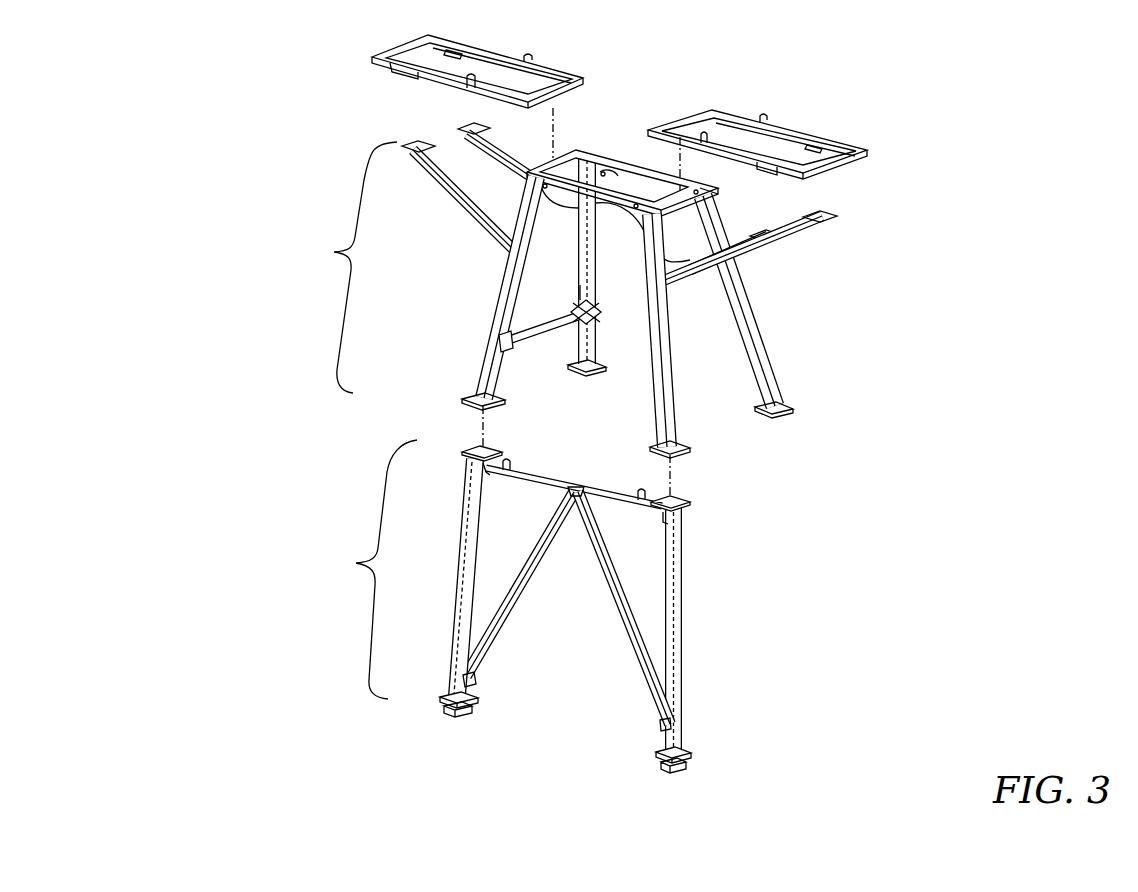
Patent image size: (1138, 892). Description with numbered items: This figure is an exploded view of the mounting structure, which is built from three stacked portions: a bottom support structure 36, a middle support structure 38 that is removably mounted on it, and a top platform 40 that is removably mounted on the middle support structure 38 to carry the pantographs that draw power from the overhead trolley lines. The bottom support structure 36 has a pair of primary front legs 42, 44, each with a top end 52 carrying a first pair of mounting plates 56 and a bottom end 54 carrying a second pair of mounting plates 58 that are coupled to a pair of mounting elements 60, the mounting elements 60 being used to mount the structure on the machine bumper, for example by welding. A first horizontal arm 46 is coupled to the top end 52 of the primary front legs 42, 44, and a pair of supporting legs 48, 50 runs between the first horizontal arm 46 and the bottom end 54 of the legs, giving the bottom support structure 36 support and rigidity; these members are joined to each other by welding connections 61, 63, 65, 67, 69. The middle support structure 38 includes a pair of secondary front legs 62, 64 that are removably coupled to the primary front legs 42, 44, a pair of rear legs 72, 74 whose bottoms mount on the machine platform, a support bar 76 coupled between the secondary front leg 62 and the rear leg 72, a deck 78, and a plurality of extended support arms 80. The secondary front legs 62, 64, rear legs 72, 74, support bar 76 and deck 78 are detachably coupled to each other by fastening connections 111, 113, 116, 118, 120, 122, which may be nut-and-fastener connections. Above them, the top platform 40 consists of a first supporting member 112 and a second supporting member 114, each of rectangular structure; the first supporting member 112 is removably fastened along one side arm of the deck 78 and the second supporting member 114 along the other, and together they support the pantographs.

The bottom support structure 36 is at (549, 605).
The middle support structure 38 is at (572, 270).
The top platform 40 is at (655, 102).
The primary front leg 42 is at (464, 603).
The primary front leg 44 is at (683, 668).
The first horizontal arm 46 is at (620, 500).
The supporting leg 48 is at (503, 608).
The supporting leg 50 is at (622, 620).
The top end 52 is at (455, 453).
The bottom end 54 is at (583, 721).
The first pair of mounting plates 56 is at (496, 450).
The second pair of mounting plates 58 is at (478, 697).
The mounting element 60 is at (470, 711).
The welding connection 61 is at (472, 682).
The secondary front leg 62 is at (484, 372).
The welding connection 63 is at (574, 497).
The secondary front leg 64 is at (678, 417).
The welding connection 65 is at (664, 724).
The welding connection 67 is at (486, 474).
The welding connection 69 is at (656, 520).
The rear leg 72 is at (546, 215).
The rear leg 74 is at (778, 398).
The support bar 76 is at (546, 350).
The deck 78 is at (597, 142).
The extended support arm 80 is at (506, 232).
The fastening connection 111 is at (580, 290).
The first supporting member 112 is at (549, 62).
The fastening connection 113 is at (620, 178).
The second supporting member 114 is at (810, 128).
The fastening connection 116 is at (725, 208).
The fastening connection 118 is at (630, 233).
The fastening connection 120 is at (603, 312).
The fastening connection 122 is at (510, 370).